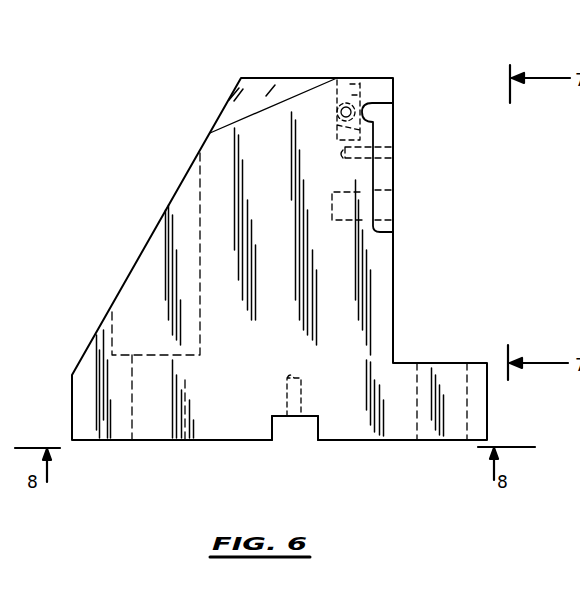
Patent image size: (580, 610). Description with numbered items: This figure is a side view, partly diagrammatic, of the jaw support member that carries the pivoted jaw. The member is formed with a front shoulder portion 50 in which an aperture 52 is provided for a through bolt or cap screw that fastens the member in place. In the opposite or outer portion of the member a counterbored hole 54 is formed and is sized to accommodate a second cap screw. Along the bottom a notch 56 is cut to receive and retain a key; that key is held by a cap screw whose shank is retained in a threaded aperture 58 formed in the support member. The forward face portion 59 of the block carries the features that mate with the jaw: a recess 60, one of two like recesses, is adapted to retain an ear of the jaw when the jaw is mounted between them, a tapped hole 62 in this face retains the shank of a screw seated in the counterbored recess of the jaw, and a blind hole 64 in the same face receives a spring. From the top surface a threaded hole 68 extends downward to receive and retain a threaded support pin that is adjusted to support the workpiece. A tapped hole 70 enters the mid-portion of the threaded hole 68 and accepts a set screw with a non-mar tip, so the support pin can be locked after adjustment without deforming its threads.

The front shoulder portion 50 is at (474, 363).
The aperture 52 is at (422, 372).
The counterbored hole 54 is at (132, 384).
The notch 56 is at (320, 424).
The threaded aperture 58 is at (292, 378).
The forward face portion 59 is at (392, 300).
The recess 60 is at (394, 181).
The tapped hole 62 is at (394, 140).
The blind hole 64 is at (347, 221).
The threaded hole 68 is at (350, 78).
The tapped hole 70 is at (341, 110).